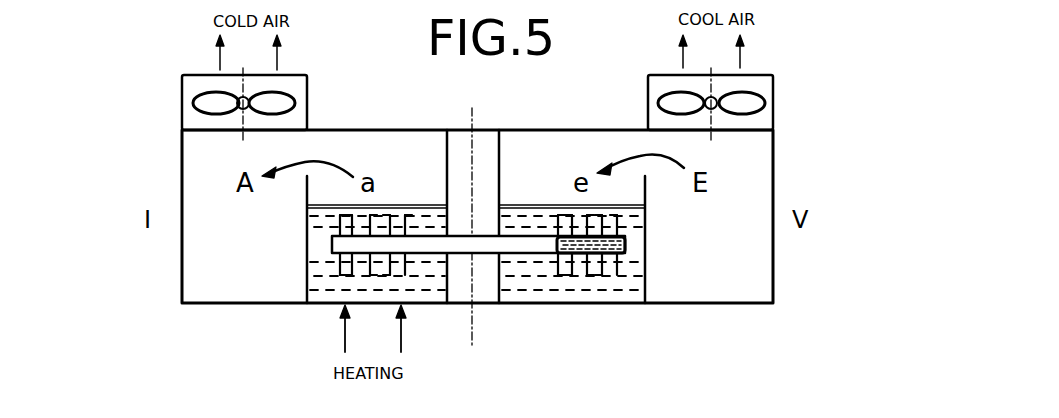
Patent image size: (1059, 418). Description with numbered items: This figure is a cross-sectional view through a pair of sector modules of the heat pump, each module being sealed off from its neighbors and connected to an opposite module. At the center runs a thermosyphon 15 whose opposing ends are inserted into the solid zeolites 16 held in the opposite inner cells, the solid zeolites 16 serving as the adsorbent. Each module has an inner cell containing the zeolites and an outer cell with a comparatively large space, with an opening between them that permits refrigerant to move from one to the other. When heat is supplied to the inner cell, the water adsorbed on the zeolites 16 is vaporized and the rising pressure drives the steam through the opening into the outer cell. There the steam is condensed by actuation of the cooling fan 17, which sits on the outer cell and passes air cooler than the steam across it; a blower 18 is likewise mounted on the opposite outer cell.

The thermosyphon 15 is at (514, 242).
The solid zeolites 16 is at (328, 285).
The cooling fan 17 is at (206, 97).
The blower 18 is at (752, 98).